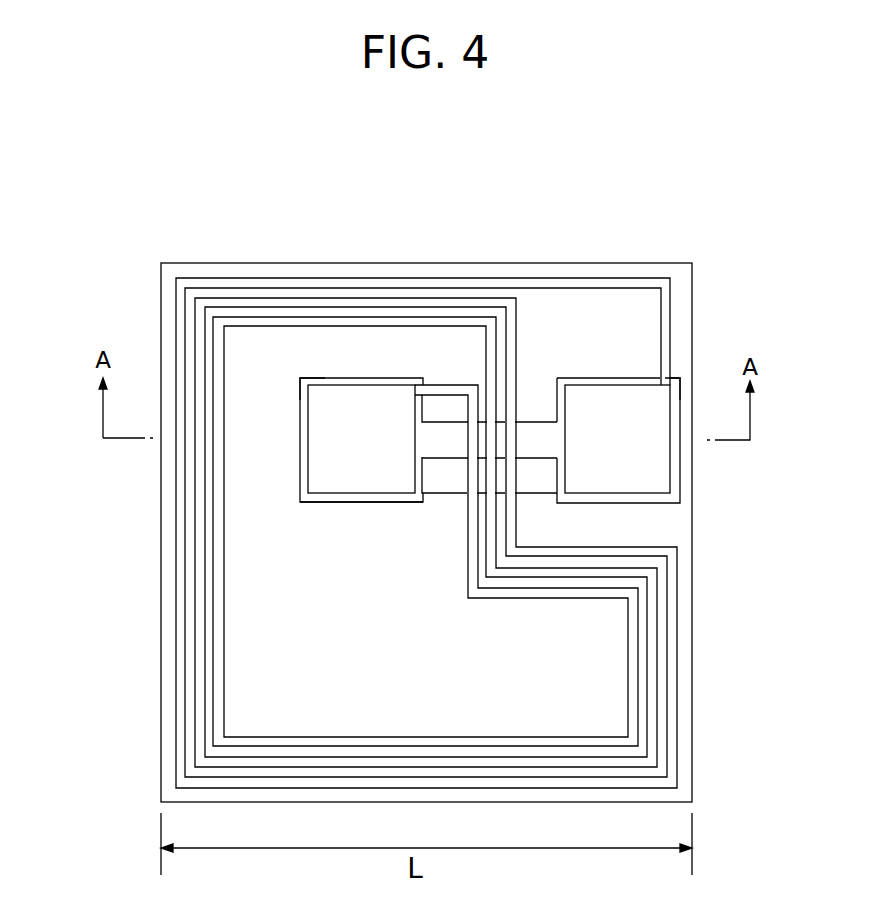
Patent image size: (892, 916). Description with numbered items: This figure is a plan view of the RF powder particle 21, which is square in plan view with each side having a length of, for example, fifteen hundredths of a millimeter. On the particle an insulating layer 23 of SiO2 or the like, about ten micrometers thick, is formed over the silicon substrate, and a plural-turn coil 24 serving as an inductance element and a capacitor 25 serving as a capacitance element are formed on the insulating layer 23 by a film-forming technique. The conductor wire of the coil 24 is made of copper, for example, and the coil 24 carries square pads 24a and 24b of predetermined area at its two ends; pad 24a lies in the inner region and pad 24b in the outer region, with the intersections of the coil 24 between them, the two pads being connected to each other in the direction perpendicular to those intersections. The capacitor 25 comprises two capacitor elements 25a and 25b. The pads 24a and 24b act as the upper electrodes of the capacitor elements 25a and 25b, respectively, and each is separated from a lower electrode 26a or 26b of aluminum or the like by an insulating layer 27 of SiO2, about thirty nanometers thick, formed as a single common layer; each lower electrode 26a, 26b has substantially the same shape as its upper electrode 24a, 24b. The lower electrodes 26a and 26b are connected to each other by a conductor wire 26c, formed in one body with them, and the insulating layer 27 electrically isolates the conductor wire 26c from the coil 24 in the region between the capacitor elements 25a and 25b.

The RF powder particle 21 is at (494, 238).
The insulating layer 23 is at (600, 268).
The coil 24 is at (357, 278).
The pad 24a is at (332, 446).
The pad 24b is at (611, 378).
The capacitor 25 is at (403, 520).
The capacitor element 25a is at (335, 375).
The capacitor element 25b is at (678, 452).
The lower electrode 26a is at (300, 378).
The lower electrode 26b is at (680, 390).
The conductor wire 26c is at (446, 416).
The insulating layer 27 is at (542, 383).